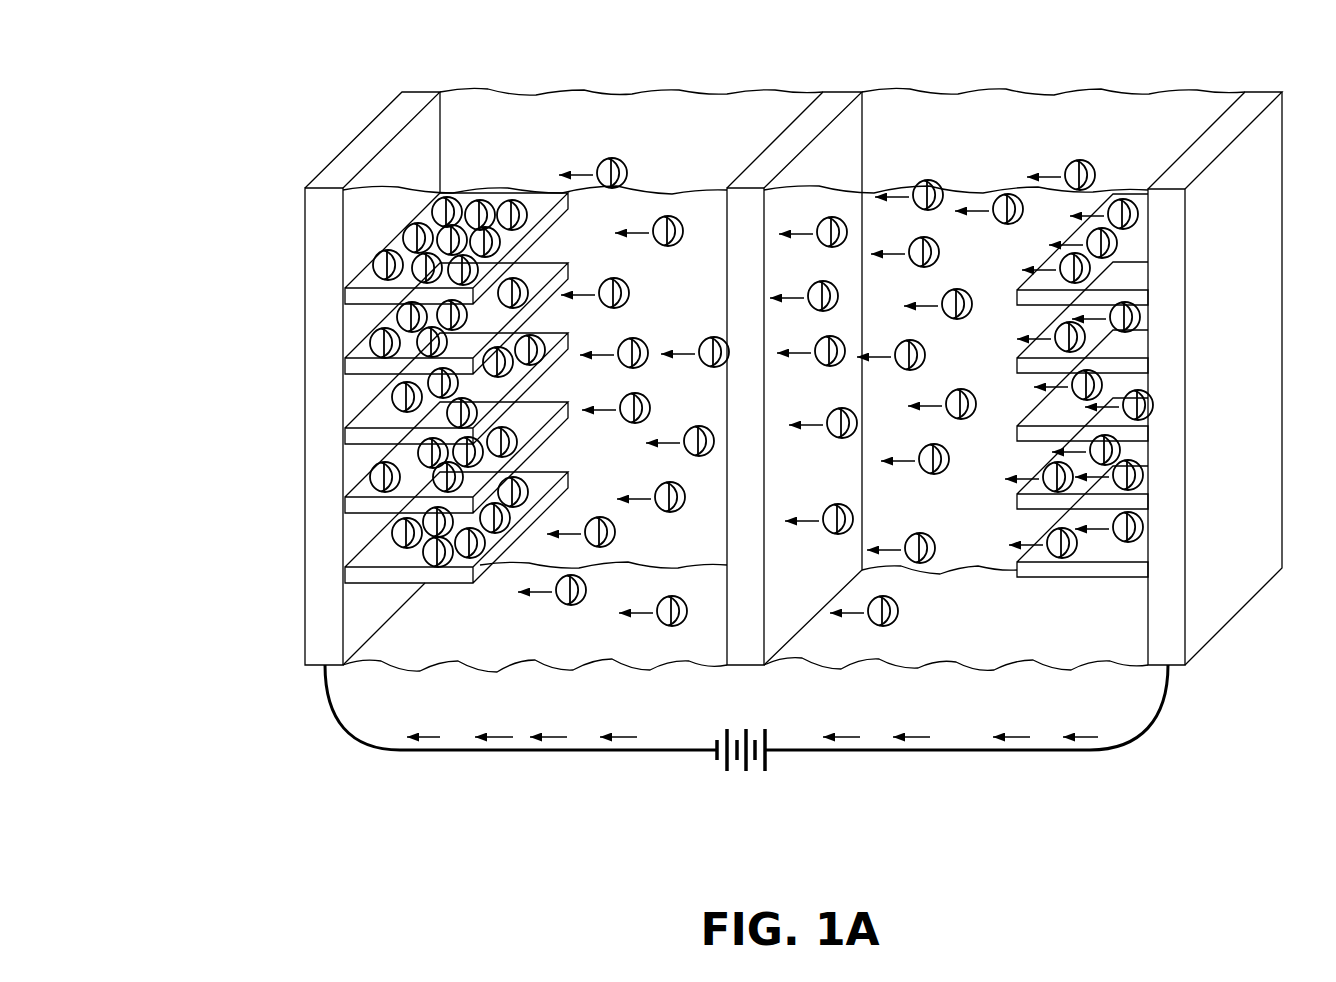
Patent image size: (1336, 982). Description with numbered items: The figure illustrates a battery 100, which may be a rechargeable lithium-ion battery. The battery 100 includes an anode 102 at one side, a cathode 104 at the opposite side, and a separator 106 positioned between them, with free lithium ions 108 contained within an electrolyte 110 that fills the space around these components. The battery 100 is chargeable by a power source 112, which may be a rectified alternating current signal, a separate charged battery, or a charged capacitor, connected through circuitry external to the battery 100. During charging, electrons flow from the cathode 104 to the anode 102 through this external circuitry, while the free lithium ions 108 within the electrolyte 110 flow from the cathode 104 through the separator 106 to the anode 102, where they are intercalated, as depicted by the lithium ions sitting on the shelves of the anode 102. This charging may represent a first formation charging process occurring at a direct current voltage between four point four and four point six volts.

The battery 100 is at (278, 63).
The anode 102 is at (421, 90).
The cathode 104 is at (1268, 90).
The separator 106 is at (842, 90).
The free lithium ions 108 is at (1087, 158).
The electrolyte 110 is at (590, 95).
The power source 112 is at (759, 781).